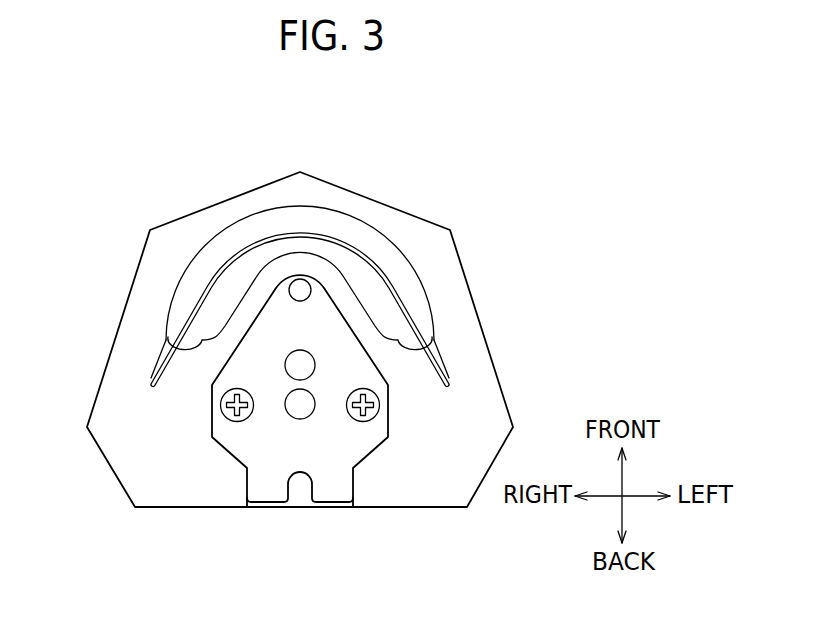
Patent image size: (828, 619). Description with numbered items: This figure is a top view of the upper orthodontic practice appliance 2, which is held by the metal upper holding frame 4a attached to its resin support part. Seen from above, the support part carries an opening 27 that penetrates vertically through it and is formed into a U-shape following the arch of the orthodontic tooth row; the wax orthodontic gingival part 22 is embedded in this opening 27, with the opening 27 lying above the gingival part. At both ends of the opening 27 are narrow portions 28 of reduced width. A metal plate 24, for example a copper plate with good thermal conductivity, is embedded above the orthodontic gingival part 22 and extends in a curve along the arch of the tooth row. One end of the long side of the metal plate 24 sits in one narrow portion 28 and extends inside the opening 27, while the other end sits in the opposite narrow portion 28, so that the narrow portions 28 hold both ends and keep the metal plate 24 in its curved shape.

The upper orthodontic practice appliance 2 is at (380, 148).
The opening 27 is at (252, 214).
The metal plate 24 is at (205, 277).
The orthodontic gingival part 22 is at (397, 262).
The narrow portions 28 is at (145, 385).
The upper holding frame 4a is at (270, 483).